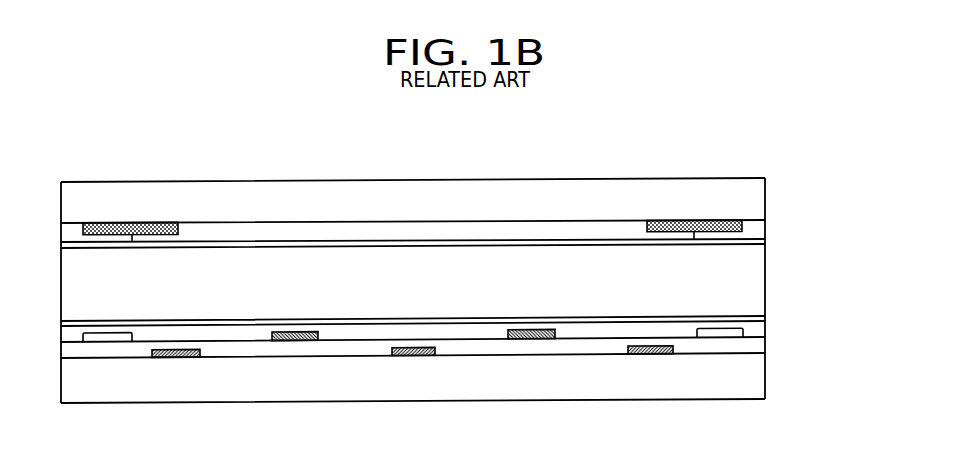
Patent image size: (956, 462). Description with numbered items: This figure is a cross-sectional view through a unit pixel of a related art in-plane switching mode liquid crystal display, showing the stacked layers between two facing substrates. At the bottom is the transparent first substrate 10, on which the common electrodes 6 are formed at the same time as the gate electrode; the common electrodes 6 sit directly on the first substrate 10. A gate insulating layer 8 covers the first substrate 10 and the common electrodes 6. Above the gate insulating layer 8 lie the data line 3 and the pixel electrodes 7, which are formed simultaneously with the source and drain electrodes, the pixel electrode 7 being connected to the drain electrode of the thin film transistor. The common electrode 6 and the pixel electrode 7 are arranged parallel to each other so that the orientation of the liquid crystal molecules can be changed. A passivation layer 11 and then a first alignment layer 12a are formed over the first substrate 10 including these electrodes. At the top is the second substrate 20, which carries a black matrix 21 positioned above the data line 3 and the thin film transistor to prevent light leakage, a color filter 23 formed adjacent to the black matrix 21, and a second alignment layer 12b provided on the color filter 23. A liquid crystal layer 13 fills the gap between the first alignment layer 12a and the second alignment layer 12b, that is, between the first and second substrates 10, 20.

The second substrate 20 is at (762, 195).
The color filter 23 is at (762, 229).
The black matrix 21 is at (695, 227).
The second alignment layer 12b is at (762, 243).
The liquid crystal layer 13 is at (762, 280).
The first alignment layer 12a is at (762, 317).
The passivation layer 11 is at (762, 331).
The pixel electrode 7 is at (539, 339).
The data line 3 is at (717, 338).
The gate insulating layer 8 is at (762, 350).
The common electrode 6 is at (651, 354).
The first substrate 10 is at (762, 377).